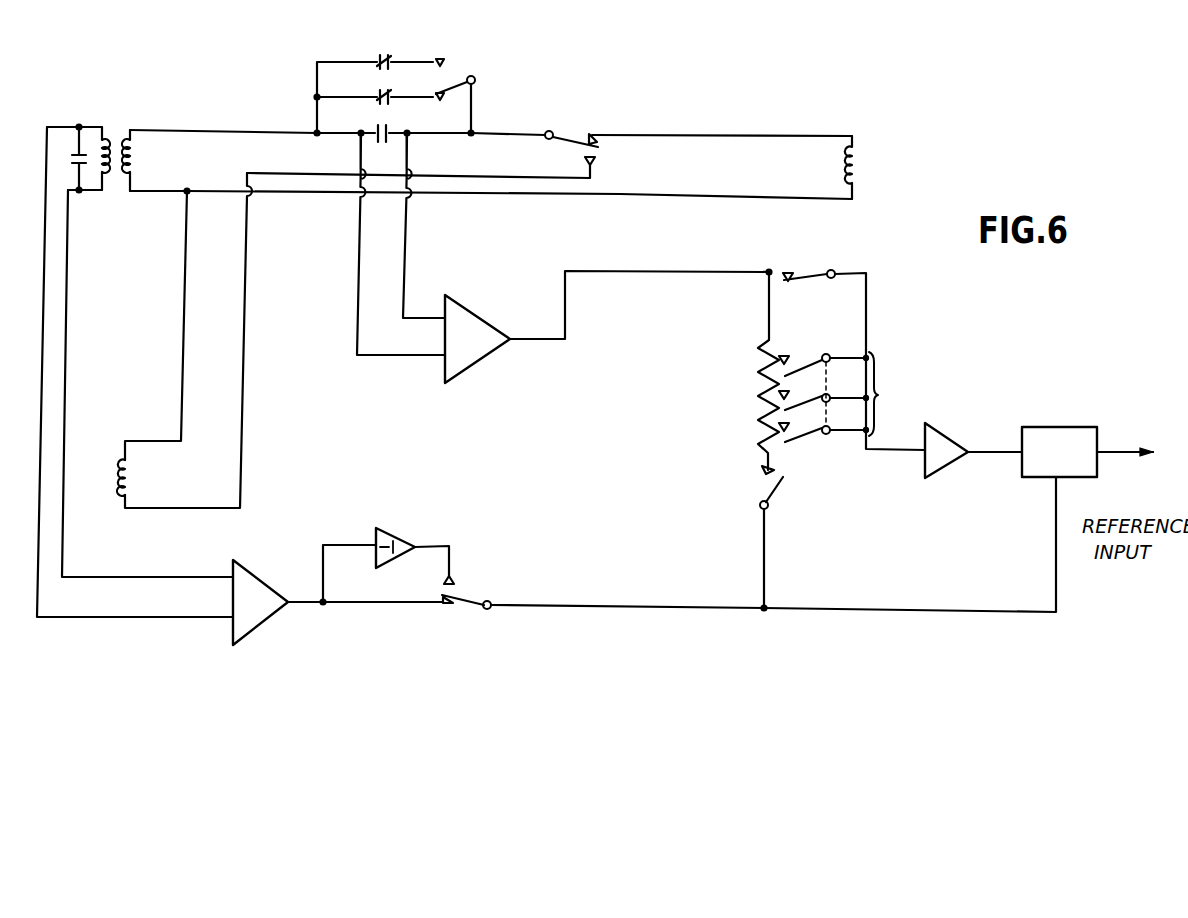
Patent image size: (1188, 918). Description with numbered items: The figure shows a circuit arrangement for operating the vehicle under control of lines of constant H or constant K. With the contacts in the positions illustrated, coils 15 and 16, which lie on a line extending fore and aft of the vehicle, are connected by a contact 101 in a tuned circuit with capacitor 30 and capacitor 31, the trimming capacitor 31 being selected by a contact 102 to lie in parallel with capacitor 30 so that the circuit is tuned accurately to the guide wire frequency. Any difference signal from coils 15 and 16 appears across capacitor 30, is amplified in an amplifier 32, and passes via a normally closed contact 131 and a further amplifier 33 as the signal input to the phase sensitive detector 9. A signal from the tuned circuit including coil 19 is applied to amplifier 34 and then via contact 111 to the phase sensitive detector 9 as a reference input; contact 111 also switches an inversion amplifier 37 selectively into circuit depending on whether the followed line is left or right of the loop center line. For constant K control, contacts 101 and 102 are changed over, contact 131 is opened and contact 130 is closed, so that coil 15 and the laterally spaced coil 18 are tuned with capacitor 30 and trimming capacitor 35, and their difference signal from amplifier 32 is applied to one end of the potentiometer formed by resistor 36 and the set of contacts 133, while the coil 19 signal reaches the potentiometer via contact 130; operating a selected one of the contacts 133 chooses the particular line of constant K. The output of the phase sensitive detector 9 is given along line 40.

The phase sensitive detector 9 is at (1049, 434).
The coil 15 is at (137, 165).
The coil 16 is at (859, 170).
The coil 18 is at (131, 478).
The coil 19 is at (107, 171).
The capacitor 30 is at (375, 133).
The trimming capacitor 31 is at (378, 96).
The amplifier 32 is at (480, 320).
The further amplifier 33 is at (947, 440).
The amplifier 34 is at (258, 583).
The trimming capacitor 35 is at (378, 62).
The resistor 36 is at (760, 393).
The inversion amplifier 37 is at (401, 540).
The line 40 is at (1122, 447).
The contact 101 is at (571, 137).
The contact 102 is at (466, 76).
The contact 111 is at (466, 613).
The contact 130 is at (788, 542).
The normally closed contact 131 is at (810, 261).
The set of contacts 133 is at (850, 397).